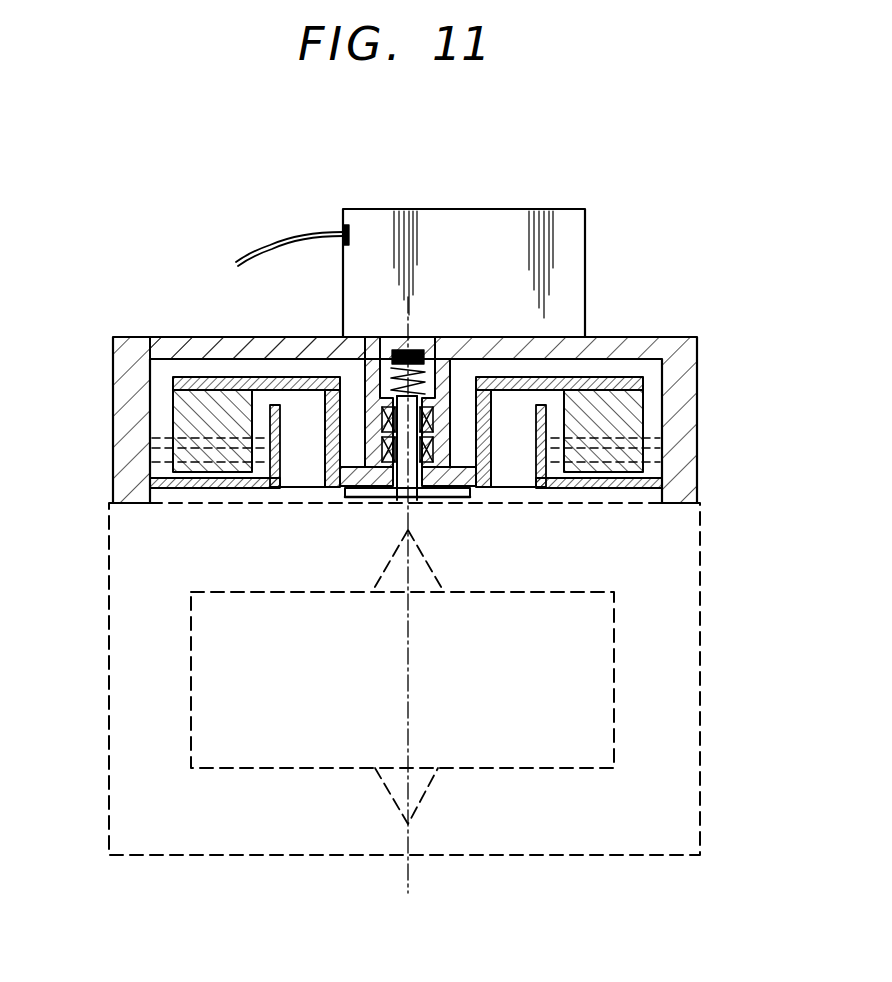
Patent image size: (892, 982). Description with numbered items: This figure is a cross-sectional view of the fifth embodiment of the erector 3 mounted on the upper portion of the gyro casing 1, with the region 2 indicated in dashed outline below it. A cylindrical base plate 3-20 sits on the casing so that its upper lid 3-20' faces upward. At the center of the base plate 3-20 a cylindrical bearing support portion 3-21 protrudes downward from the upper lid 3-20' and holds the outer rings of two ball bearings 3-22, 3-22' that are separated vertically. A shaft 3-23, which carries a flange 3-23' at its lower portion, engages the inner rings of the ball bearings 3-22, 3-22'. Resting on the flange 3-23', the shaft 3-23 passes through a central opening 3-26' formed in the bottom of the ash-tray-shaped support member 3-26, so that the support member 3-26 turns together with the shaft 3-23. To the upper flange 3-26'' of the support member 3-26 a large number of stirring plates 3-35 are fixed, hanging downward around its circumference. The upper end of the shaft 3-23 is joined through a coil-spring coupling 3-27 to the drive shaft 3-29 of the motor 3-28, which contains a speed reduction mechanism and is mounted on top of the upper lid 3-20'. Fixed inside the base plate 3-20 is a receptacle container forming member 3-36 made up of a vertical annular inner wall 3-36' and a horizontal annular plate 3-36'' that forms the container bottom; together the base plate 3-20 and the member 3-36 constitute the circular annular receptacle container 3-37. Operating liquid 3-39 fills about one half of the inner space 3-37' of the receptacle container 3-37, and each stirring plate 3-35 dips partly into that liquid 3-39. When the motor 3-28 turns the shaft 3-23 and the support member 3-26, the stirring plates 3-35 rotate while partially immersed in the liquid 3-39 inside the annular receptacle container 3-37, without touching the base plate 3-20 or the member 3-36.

The gyro casing 1 is at (252, 855).
The optical disc / target region 2 is at (614, 728).
The erector 3 is at (600, 262).
The motor 3-28 is at (575, 212).
The base plate 3-20 is at (444, 420).
The upper lid 3-20' is at (257, 328).
The coupling 3-27 is at (356, 396).
The drive shaft 3-29 is at (410, 355).
The cylindrical bearing support portion 3-21 is at (447, 432).
The shaft 3-23 is at (419, 522).
The flange 3-23' is at (464, 503).
The ball bearing 3-22 is at (371, 482).
The ball bearing 3-22' is at (390, 537).
The support member 3-26 is at (581, 381).
The central opening 3-26' is at (361, 562).
The upper flange 3-26'' is at (205, 392).
The stirring plate 3-35 is at (160, 400).
The receptacle container 3-37 is at (663, 438).
The inner space 3-37' is at (152, 423).
The operating liquid 3-39 is at (160, 455).
The receptacle container forming member 3-36 is at (657, 446).
The annular inner wall 3-36' is at (231, 472).
The annular plate 3-36'' is at (470, 507).